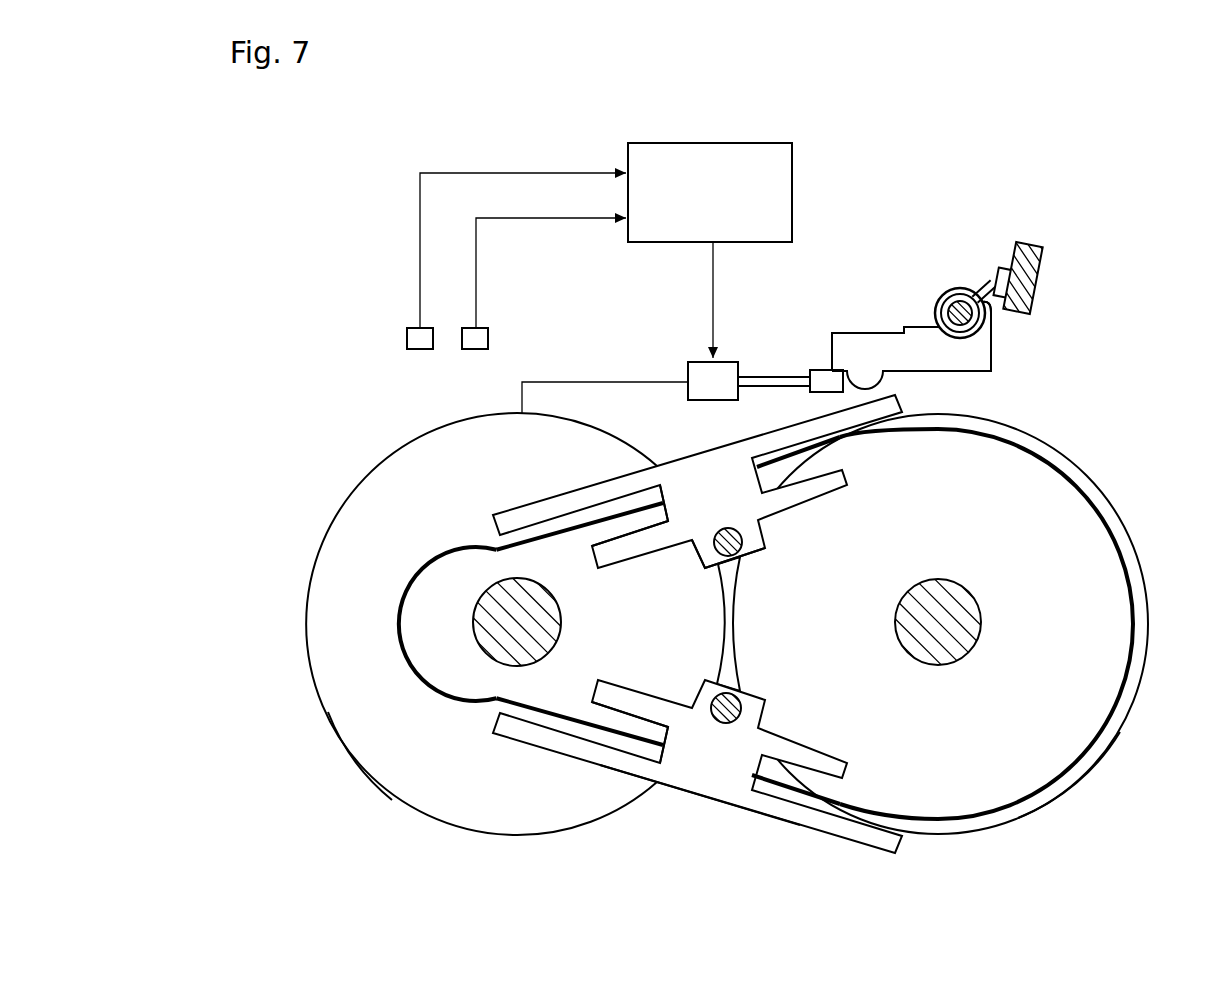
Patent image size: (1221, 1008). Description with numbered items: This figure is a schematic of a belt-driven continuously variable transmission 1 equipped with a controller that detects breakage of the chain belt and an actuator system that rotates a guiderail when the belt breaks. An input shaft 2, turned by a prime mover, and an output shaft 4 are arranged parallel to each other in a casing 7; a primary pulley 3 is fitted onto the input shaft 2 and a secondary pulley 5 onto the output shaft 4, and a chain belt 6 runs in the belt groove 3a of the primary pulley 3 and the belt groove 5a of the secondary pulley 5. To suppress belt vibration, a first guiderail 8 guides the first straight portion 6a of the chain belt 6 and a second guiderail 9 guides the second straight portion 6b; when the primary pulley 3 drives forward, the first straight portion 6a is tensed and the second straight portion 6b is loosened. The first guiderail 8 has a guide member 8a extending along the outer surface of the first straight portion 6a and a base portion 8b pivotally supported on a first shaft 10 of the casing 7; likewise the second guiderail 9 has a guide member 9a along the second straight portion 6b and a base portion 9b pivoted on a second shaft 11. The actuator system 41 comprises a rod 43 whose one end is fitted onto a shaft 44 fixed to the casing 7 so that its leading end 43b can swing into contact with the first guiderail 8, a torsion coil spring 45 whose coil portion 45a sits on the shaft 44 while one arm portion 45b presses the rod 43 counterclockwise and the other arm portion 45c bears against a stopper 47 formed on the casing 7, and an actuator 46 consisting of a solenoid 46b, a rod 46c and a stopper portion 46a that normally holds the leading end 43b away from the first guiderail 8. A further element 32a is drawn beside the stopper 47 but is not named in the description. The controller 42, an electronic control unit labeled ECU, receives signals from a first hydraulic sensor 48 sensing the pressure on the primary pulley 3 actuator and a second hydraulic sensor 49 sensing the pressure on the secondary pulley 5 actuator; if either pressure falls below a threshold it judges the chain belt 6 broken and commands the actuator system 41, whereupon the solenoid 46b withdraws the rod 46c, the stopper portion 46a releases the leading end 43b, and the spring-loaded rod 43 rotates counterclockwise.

The belt-driven continuously variable transmission 1 is at (338, 181).
The input shaft 2 is at (957, 604).
The primary pulley 3 is at (1148, 612).
The belt groove 3a is at (1028, 777).
The output shaft 4 is at (500, 633).
The secondary pulley 5 is at (307, 617).
The belt groove 5a is at (360, 727).
The chain belt 6 is at (453, 577).
The first straight portion 6a is at (565, 533).
The second straight portion 6b is at (578, 723).
The casing 7 is at (1036, 272).
The first guiderail 8 is at (792, 527).
The guide member 8a is at (693, 498).
The base portion 8b is at (704, 562).
The second guiderail 9 is at (741, 824).
The guide member 9a is at (703, 767).
The base portion 9b is at (694, 688).
The first shaft 10 is at (742, 556).
The second shaft 11 is at (738, 686).
The support portion 32a is at (997, 316).
The actuator system 41 is at (929, 276).
The controller 42 is at (793, 200).
The rod 43 is at (876, 312).
The leading end 43b is at (832, 336).
The shaft 44 is at (972, 332).
The torsion coil spring 45 is at (960, 280).
The coil portion 45a is at (947, 291).
The arm portion 45b is at (910, 327).
The arm portion 45c is at (991, 290).
The actuator 46 is at (682, 367).
The stopper portion 46a is at (812, 392).
The solenoid 46b is at (700, 398).
The rod 46c is at (775, 378).
The stopper 47 is at (1004, 267).
The first hydraulic sensor 48 is at (420, 350).
The second hydraulic sensor 49 is at (482, 350).